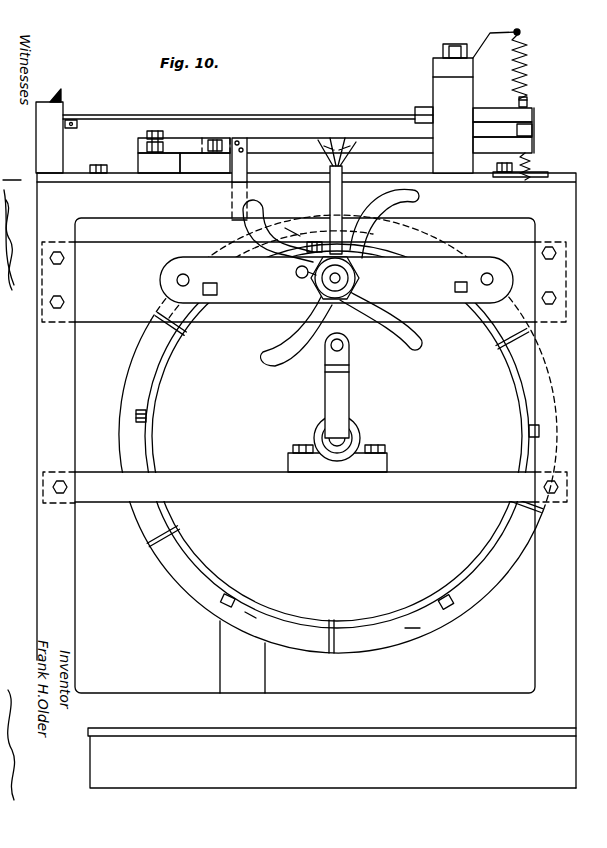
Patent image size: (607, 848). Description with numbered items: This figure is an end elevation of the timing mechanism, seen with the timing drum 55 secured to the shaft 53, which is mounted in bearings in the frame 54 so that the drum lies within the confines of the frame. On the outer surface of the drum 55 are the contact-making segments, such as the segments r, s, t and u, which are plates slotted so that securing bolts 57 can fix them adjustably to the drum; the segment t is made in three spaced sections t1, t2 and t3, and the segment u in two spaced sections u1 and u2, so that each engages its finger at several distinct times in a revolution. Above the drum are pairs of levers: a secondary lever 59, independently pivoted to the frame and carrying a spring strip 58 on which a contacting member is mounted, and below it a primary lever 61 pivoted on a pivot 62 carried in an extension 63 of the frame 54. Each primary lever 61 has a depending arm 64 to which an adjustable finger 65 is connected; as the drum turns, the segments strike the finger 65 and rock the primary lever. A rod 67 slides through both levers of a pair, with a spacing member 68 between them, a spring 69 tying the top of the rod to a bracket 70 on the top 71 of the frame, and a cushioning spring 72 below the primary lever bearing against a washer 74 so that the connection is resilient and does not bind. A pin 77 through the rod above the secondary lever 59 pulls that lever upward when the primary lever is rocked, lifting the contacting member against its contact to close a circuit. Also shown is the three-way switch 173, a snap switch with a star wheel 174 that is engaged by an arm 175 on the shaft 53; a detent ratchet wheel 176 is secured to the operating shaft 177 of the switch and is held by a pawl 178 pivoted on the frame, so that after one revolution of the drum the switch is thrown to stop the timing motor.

The shaft 53 is at (351, 441).
The frame 54 is at (160, 284).
The timing drum 55 is at (163, 392).
The securing bolt 57 is at (229, 598).
The spring strip 58 is at (180, 109).
The secondary lever 59 is at (278, 109).
The primary lever 61 is at (302, 140).
The pivot 62 is at (215, 136).
The extension 63 is at (140, 147).
The depending arm 64 is at (232, 190).
The finger 65 is at (240, 232).
The rod 67 is at (535, 110).
The spacing member 68 is at (535, 131).
The spring 69 is at (527, 62).
The bracket 70 is at (472, 33).
The top 71 is at (431, 67).
The cushioning spring 72 is at (535, 171).
The washer 74 is at (535, 156).
The pin 77 is at (519, 107).
The three-way switch 173 is at (336, 280).
The star wheel 174 is at (302, 330).
The arm 175 is at (350, 389).
The detent ratchet wheel 176 is at (358, 278).
The operating shaft 177 is at (371, 320).
The pawl 178 is at (273, 283).
The contact-making segment r is at (288, 225).
The contact-making segment s is at (185, 330).
The contact-making segment t is at (141, 436).
The segment section t1 is at (502, 353).
The segment section t2 is at (414, 623).
The segment section t3 is at (156, 411).
The contact-making segment u is at (520, 386).
The segment section u1 is at (525, 411).
The segment section u2 is at (250, 612).